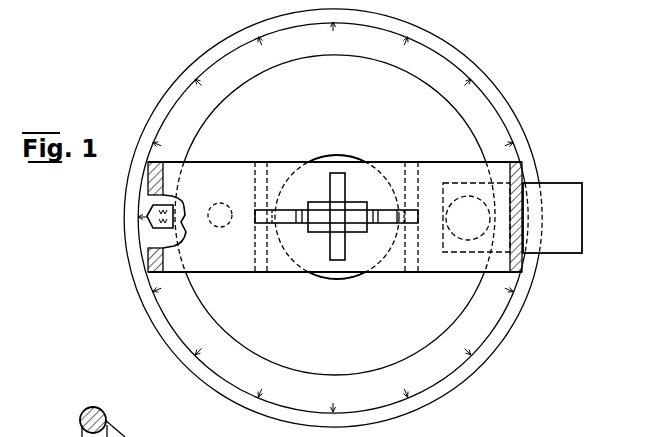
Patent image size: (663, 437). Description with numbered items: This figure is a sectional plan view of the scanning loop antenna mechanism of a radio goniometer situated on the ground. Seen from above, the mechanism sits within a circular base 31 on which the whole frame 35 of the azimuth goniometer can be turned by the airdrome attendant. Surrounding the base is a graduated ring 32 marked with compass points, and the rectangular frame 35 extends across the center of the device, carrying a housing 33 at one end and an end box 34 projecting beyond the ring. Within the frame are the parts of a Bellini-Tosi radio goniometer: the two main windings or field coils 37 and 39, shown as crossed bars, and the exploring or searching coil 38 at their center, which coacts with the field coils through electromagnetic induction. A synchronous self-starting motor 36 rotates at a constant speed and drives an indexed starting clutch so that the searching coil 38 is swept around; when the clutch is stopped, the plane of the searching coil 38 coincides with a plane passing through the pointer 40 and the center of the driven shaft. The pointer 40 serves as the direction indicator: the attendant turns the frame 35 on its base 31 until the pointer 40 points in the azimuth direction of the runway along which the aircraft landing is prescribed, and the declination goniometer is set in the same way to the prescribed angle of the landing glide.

The base 31 is at (468, 58).
The graduated compass ring 32 is at (485, 109).
The dashed housing 33 is at (463, 233).
The end box 34 is at (557, 193).
The frame 35 is at (465, 170).
The synchronous self-starting motor 36 is at (354, 279).
The field coil 37 is at (332, 262).
The searching coil 38 is at (318, 233).
The field coil 39 is at (303, 222).
The pointer 40 is at (148, 219).